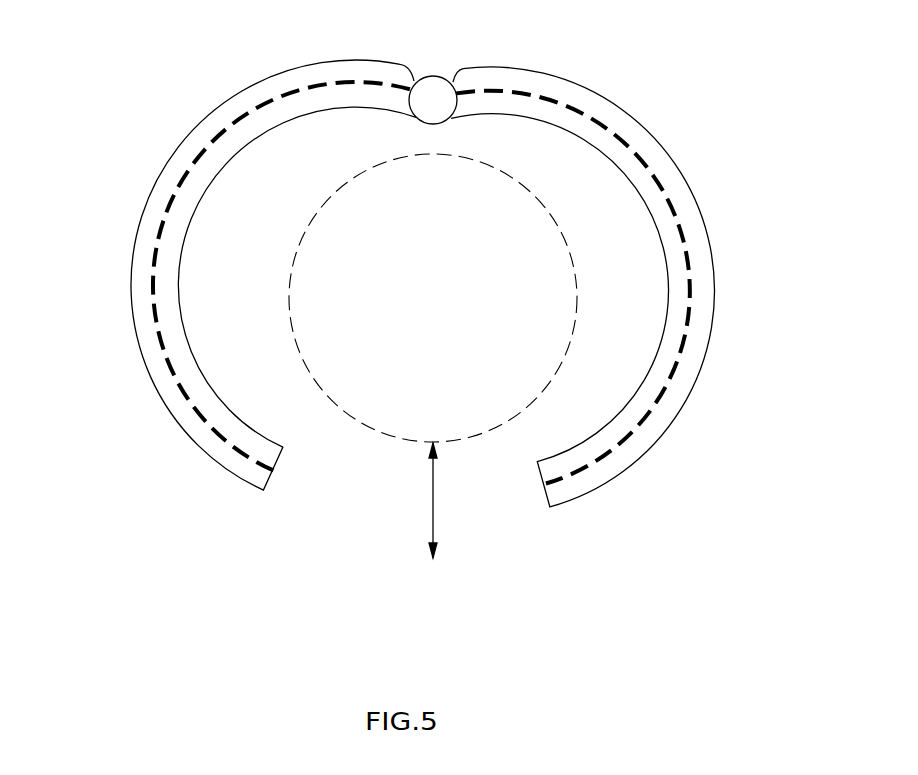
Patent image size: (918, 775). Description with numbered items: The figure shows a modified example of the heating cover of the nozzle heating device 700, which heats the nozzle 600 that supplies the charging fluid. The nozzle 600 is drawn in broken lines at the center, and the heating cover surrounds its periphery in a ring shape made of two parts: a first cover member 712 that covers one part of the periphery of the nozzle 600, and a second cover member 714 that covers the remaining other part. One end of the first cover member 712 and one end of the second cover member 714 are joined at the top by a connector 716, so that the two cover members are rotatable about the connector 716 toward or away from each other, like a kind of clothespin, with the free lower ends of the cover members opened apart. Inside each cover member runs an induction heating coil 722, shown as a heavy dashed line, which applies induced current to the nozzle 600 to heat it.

The nozzle heating device 700 is at (422, 257).
The first cover member 712 is at (131, 282).
The second cover member 714 is at (713, 290).
The connector 716 is at (433, 88).
The induction heating coil 722 is at (213, 425).
The nozzle 600 is at (481, 447).